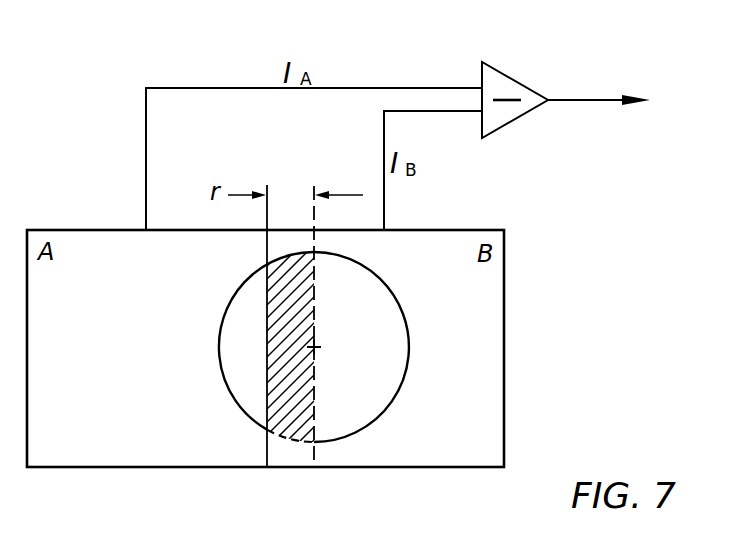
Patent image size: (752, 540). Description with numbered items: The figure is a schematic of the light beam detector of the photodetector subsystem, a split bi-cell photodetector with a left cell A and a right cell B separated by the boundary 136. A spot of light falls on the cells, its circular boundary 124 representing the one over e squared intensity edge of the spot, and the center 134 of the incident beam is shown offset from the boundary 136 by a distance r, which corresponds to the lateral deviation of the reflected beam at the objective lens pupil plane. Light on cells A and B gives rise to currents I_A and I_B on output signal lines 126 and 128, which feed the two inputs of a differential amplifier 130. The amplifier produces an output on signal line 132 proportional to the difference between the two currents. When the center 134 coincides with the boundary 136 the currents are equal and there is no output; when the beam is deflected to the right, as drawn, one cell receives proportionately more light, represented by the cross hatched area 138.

The circular boundary 124 is at (408, 318).
The output signal line 126 is at (213, 89).
The output signal line 128 is at (383, 125).
The differential amplifier 130 is at (517, 77).
The signal line 132 is at (594, 98).
The center of the incident beam 134 is at (316, 346).
The boundary between cell A and cell B 136 is at (267, 451).
The cross hatched area 138 is at (274, 401).